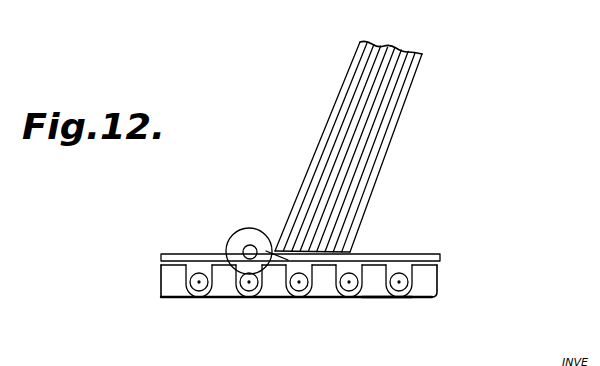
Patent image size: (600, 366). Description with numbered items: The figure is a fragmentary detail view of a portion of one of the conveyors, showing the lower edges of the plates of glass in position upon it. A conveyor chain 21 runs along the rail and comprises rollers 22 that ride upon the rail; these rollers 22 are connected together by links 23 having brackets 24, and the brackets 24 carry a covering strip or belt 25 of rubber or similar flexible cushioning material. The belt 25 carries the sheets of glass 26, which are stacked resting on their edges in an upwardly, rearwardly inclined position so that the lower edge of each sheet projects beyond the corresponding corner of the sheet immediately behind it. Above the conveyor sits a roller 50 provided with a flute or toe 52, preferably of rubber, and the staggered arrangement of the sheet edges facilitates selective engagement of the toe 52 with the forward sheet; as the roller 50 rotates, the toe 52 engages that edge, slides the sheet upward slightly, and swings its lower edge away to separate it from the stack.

The conveyor chain 21 is at (367, 295).
The roller 22 is at (193, 296).
The link 23 is at (275, 287).
The bracket 24 is at (432, 266).
The covering strip or belt 25 is at (440, 255).
The sheet of glass 26 is at (356, 114).
The roller 50 is at (236, 236).
The flute or toe 52 is at (252, 246).